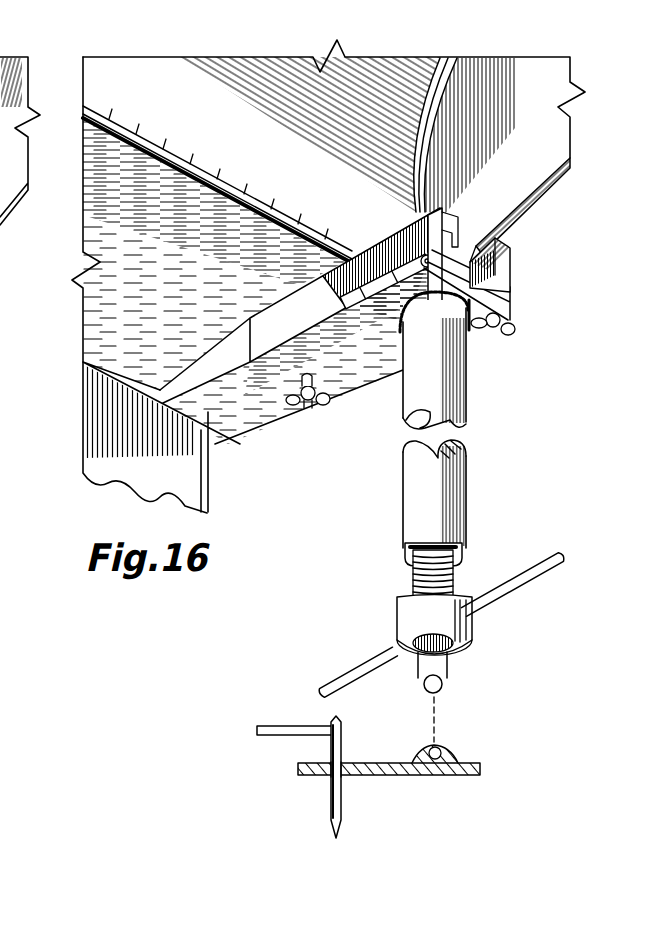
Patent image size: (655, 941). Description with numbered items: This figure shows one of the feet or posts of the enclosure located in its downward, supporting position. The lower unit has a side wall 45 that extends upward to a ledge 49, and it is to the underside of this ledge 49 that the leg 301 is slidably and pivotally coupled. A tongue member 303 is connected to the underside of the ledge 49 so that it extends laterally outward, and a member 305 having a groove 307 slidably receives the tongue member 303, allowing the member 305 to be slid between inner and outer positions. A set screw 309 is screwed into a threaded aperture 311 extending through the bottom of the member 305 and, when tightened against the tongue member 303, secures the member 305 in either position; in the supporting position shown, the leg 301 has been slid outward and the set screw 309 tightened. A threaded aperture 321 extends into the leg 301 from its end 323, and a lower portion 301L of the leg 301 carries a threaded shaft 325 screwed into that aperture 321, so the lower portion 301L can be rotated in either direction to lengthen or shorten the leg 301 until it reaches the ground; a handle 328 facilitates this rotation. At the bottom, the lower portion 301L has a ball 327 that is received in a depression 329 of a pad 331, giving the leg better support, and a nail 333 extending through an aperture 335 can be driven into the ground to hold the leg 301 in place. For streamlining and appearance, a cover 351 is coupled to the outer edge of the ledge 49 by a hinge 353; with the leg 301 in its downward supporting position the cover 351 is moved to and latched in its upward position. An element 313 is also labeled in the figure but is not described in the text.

The side wall 45 is at (20, 204).
The ledge 49 is at (130, 366).
The leg 301 is at (467, 372).
The lower portion of the leg 301L is at (400, 598).
The tongue member 303 is at (205, 428).
The member 305 is at (505, 293).
The groove 307 is at (508, 268).
The set screw 309 is at (307, 410).
The threaded aperture 311 is at (277, 380).
The connecting rod 313 is at (378, 318).
The threaded aperture 321 is at (405, 560).
The end 323 is at (464, 560).
The threaded shaft 325 is at (413, 578).
The ball 327 is at (440, 695).
The handle 328 is at (507, 597).
The depression 329 is at (437, 748).
The pad 331 is at (480, 768).
The nail 333 is at (327, 722).
The aperture 335 is at (340, 777).
The cover 351 is at (555, 172).
The hinge 353 is at (170, 172).